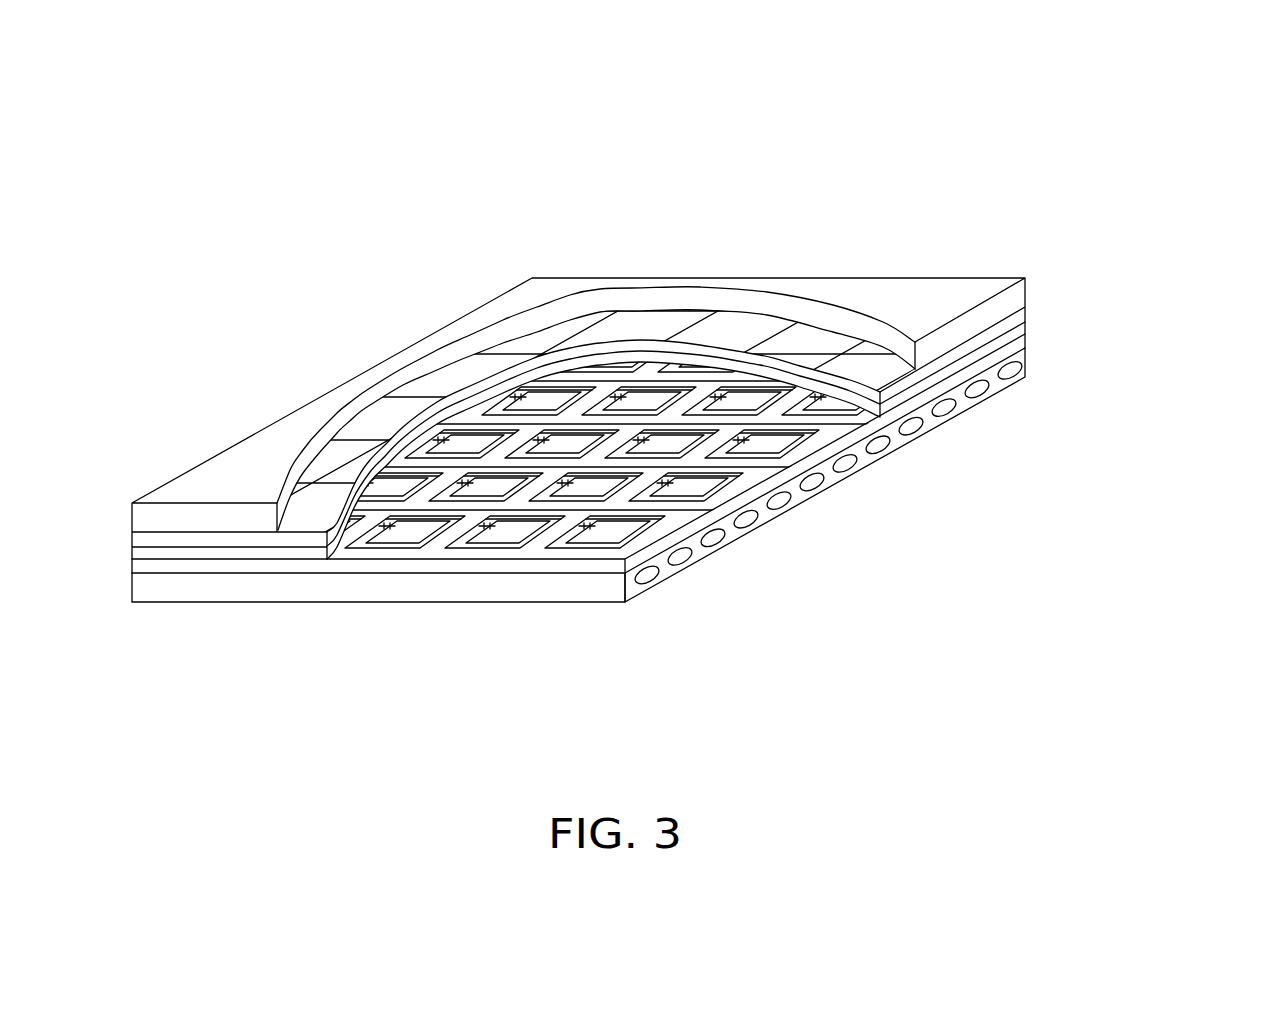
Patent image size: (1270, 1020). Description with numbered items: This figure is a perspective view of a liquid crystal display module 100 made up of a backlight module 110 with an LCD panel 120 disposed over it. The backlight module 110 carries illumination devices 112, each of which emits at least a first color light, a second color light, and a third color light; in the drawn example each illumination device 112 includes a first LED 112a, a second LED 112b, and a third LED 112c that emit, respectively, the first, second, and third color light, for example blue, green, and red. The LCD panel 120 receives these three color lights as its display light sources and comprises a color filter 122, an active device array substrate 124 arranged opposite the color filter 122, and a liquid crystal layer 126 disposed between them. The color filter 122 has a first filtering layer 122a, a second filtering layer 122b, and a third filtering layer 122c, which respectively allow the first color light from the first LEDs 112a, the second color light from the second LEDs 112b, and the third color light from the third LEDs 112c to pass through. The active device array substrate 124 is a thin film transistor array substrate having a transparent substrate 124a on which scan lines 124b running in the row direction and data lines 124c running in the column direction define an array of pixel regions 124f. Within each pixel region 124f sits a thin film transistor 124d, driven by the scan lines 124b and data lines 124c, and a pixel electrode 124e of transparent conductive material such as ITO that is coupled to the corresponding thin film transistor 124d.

The liquid crystal display module 100 is at (692, 445).
The backlight module 110 is at (578, 566).
The illumination device 112 is at (828, 571).
The first light emitting diode 112a is at (650, 583).
The second light emitting diode 112b is at (684, 562).
The third light emitting diode 112c is at (716, 542).
The LCD panel 120 is at (692, 357).
The color filter 122 is at (642, 341).
The first filtering layer 122a is at (863, 365).
The second filtering layer 122b is at (800, 347).
The third filtering layer 122c is at (740, 327).
The active device array substrate 124 is at (644, 357).
The transparent substrate 124a is at (1023, 343).
The scan lines 124b is at (750, 465).
The data lines 124c is at (740, 480).
The thin film transistors 124d is at (775, 443).
The pixel electrodes 124e is at (768, 455).
The pixel regions 124f is at (700, 455).
The liquid crystal layer 126 is at (1023, 332).